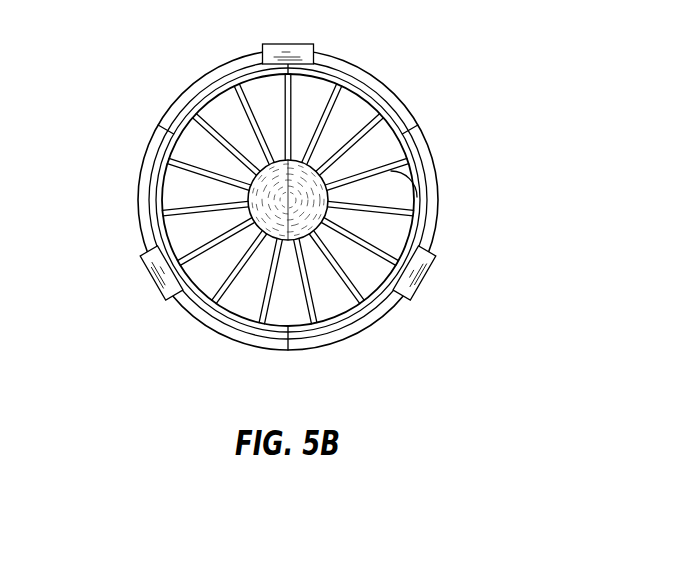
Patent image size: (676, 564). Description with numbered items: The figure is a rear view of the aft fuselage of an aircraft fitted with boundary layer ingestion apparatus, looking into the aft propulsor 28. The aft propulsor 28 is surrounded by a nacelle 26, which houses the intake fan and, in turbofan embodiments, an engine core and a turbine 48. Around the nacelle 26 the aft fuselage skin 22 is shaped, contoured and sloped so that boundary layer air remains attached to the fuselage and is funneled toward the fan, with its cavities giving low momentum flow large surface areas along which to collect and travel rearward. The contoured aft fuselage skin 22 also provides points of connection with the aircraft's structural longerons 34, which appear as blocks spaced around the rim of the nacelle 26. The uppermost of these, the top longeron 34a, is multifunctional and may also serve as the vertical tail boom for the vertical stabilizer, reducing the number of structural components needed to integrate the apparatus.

The aft fuselage skin 22 is at (186, 92).
The nacelle 26 is at (356, 85).
The aft propulsor 28 is at (108, 183).
The structural longeron 34 is at (150, 280).
The top longeron 34a is at (288, 43).
The turbine 48 is at (418, 196).